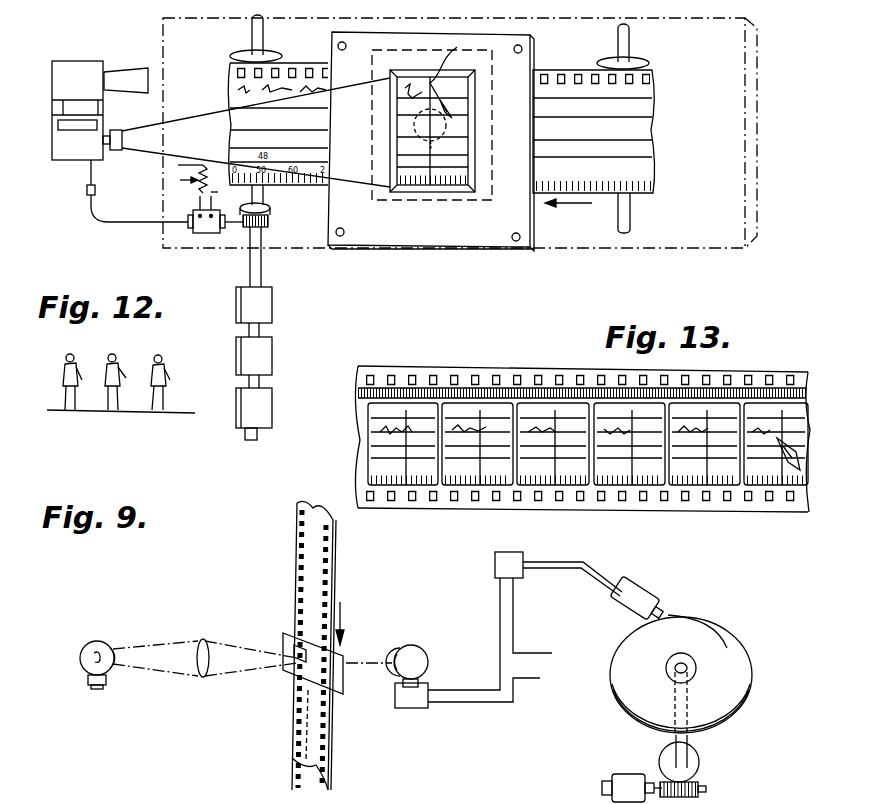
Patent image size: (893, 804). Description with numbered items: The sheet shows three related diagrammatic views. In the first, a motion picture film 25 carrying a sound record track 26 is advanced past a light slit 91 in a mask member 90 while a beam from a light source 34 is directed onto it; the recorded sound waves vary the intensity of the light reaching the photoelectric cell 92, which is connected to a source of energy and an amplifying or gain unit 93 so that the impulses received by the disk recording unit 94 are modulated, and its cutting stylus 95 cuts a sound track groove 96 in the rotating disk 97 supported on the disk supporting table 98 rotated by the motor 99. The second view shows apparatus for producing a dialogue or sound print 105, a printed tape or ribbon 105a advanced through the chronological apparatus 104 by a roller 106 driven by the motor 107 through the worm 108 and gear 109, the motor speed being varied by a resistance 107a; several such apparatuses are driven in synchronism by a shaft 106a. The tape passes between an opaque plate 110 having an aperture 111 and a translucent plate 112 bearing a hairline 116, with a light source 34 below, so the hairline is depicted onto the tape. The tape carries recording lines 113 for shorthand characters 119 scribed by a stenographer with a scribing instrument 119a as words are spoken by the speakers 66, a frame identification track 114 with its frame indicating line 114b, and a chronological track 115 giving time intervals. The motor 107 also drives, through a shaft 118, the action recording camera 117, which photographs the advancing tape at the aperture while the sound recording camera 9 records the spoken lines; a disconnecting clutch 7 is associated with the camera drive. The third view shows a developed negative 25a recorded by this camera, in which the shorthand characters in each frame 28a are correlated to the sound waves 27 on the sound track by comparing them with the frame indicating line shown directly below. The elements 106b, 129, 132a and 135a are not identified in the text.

In FIG. 12, the sound recording camera 9 is at (63, 75).
In FIG. 12, the disconnecting clutch 7 is at (85, 192).
In FIG. 12, the action recording camera 117 is at (78, 152).
In FIG. 12, the shaft 118 is at (118, 222).
In FIG. 12, the motor 107 is at (205, 233).
In FIG. 12, the resistance 107a is at (200, 193).
In FIG. 12, the worm 108 is at (262, 230).
In FIG. 12, the gear 109 is at (270, 210).
In FIG. 12, the opaque plate 110 is at (383, 235).
In FIG. 12, the aperture 111 is at (432, 151).
In FIG. 13, the aperture 111 is at (405, 410).
In FIG. 12, the translucent plate 112 is at (448, 200).
In FIG. 12, the recording lines 113 is at (637, 98).
In FIG. 12, the motion picture frame identification track 114 is at (650, 191).
In FIG. 13, the motion picture frame identification track 114 is at (473, 480).
In FIG. 13, the frame indicating line 114b is at (368, 482).
In FIG. 12, the chronological track 115 is at (635, 167).
In FIG. 13, the chronological track 115 is at (378, 460).
In FIG. 12, the hairline 116 is at (459, 72).
In FIG. 12, the shorthand characters 119 is at (233, 82).
In FIG. 13, the shorthand characters 119 is at (386, 430).
In FIG. 12, the scribing instrument 119a is at (455, 118).
In FIG. 13, the scribing instrument 119a is at (795, 462).
In FIG. 12, the light source 34 is at (445, 131).
In FIG. 9, the light source 34 is at (94, 645).
In FIG. 12, the chronological apparatus 104 is at (735, 122).
In FIG. 12, the dialogue or sound print 105 is at (545, 66).
In FIG. 12, the printed tape or ribbon 105a is at (640, 131).
In FIG. 12, the roller 106 is at (283, 55).
In FIG. 12, the shaft 106a is at (245, 436).
In FIG. 12, the spool 106b is at (640, 60).
In FIG. 12, the speakers 66 is at (63, 413).
In FIG. 13, the sound waves 27 is at (393, 388).
In FIG. 13, the sound record track 26 is at (484, 393).
In FIG. 9, the sound record track 26 is at (306, 580).
In FIG. 9, the motion picture film 25 is at (335, 582).
In FIG. 13, the developed negative 25a is at (563, 373).
In FIG. 13, the frame 28a is at (715, 418).
In FIG. 9, the mask member 90 is at (340, 692).
In FIG. 9, the light slit 91 is at (300, 660).
In FIG. 9, the photoelectric cell 92 is at (426, 652).
In FIG. 9, the amplifying or gain unit 93 is at (495, 565).
In FIG. 9, the disk recording unit 94 is at (645, 594).
In FIG. 9, the cutting stylus 95 is at (672, 612).
In FIG. 9, the sound track groove 96 is at (725, 634).
In FIG. 9, the rotating disk 97 is at (727, 695).
In FIG. 9, the disk supporting table 98 is at (720, 731).
In FIG. 9, the motor 99 is at (622, 776).
In FIG. 9, the base 129 is at (400, 794).
In FIG. 9, the element 132a is at (82, 797).
In FIG. 9, the element 135a is at (168, 797).